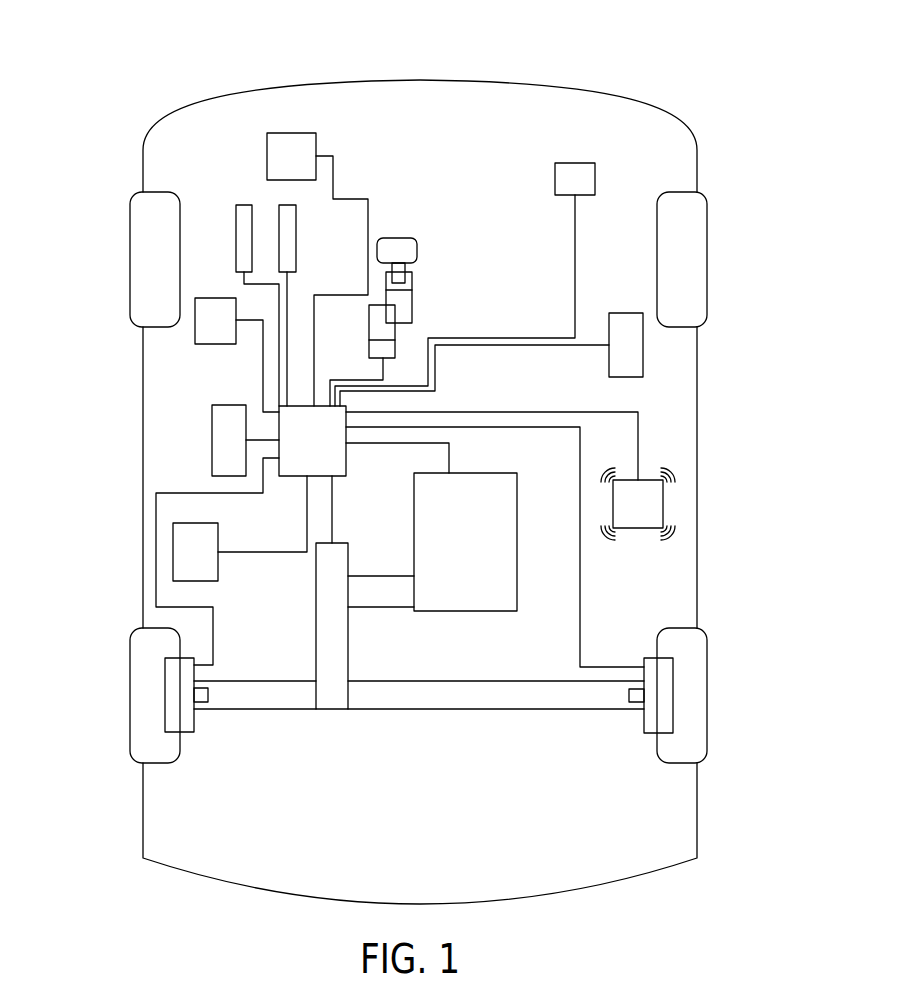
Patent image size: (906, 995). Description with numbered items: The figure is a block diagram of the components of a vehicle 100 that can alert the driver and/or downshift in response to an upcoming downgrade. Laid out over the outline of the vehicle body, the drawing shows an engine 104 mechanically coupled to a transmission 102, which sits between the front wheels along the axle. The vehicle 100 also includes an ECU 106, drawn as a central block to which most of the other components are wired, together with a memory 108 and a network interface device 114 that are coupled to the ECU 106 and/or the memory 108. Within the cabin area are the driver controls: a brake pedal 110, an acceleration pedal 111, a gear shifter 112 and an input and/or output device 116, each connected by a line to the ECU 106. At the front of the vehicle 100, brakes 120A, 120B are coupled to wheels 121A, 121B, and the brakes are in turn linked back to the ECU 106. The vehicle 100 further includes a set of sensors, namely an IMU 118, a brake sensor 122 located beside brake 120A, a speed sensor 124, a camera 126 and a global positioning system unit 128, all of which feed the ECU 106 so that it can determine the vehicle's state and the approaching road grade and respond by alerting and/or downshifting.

The vehicle 100 is at (84, 76).
The transmission 102 is at (323, 601).
The engine 104 is at (508, 522).
The ECU 106 is at (295, 476).
The memory 108 is at (230, 405).
The brake pedal 110 is at (297, 235).
The acceleration pedal 111 is at (242, 205).
The gear shifter 112 is at (413, 301).
The network interface device 114 is at (640, 528).
The input and/or output device 116 is at (317, 142).
The IMU 118 is at (627, 313).
The brake 120A is at (196, 724).
The brake 120B is at (644, 725).
The wheel 121A is at (130, 704).
The wheel 121B is at (708, 695).
The brake sensor 122 is at (210, 694).
The speed sensor 124 is at (212, 298).
The camera 126 is at (596, 177).
The global positioning system (GPS) unit 128 is at (207, 582).